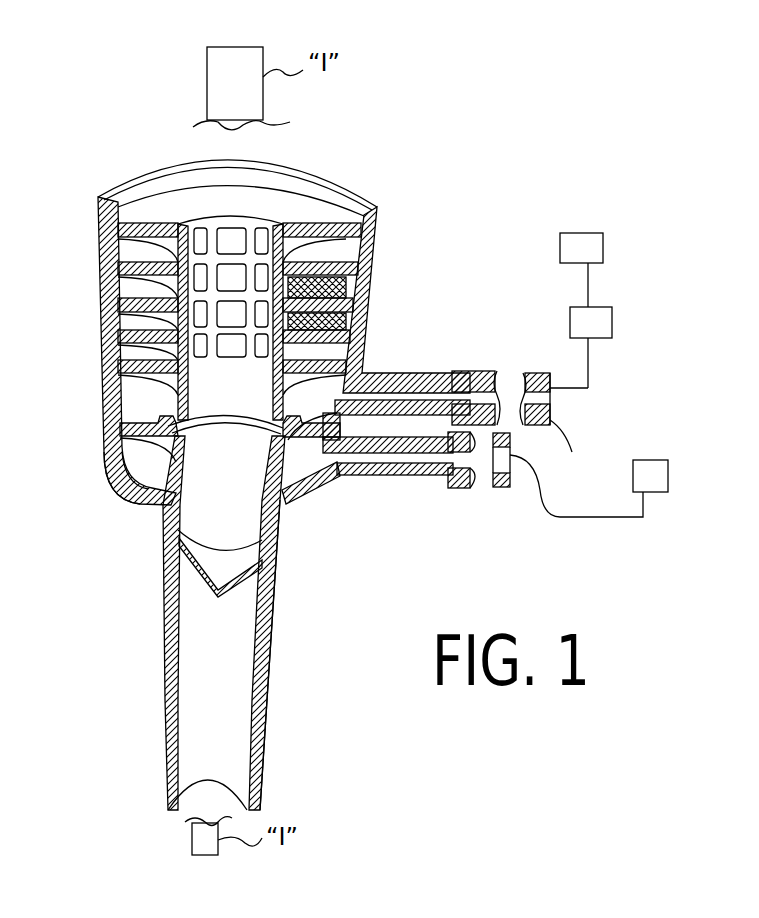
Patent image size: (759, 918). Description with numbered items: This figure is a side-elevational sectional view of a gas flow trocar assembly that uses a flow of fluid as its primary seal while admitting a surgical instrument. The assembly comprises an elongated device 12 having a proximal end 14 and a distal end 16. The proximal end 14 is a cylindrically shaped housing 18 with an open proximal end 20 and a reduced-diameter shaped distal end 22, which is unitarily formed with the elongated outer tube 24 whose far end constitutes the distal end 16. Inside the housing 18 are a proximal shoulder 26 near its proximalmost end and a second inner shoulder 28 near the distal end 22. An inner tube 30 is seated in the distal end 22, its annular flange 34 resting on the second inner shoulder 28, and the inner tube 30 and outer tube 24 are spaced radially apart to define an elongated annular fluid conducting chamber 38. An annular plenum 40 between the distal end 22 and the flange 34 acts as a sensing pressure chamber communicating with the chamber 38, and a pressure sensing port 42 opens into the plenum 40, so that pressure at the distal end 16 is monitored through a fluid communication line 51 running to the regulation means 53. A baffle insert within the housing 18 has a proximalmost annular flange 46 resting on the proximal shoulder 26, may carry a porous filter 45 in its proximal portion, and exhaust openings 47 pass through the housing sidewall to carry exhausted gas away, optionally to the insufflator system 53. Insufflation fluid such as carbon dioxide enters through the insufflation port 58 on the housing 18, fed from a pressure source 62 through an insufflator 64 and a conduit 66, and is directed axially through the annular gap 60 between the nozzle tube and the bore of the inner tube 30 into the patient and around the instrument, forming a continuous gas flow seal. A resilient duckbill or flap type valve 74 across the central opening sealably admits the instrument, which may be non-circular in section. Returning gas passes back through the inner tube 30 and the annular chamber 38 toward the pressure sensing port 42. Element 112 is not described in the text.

The elongated device 12 is at (92, 478).
The proximal end 14 is at (98, 232).
The distal end 16 is at (492, 375).
The housing 18 is at (97, 330).
The open proximal end 20 is at (377, 210).
The distal end of housing 22 is at (322, 488).
The outer tube 24 is at (162, 697).
The proximal shoulder 26 is at (373, 262).
The second inner shoulder 28 is at (106, 452).
The inner tube 30 is at (262, 650).
The annular flange 34 is at (110, 487).
The fluid conducting chamber 38 is at (267, 707).
The annular plenum 40 is at (142, 465).
The pressure sensing port 42 is at (393, 478).
The porous filter 45 is at (365, 346).
The proximalmost annular flange 46 is at (320, 213).
The exhaust openings 47 is at (352, 300).
The fluid communication line 51 is at (588, 519).
The regulation means 53 is at (662, 472).
The insufflation port 58 is at (410, 378).
The annular gap 60 is at (238, 428).
The pressure source 62 is at (603, 250).
The insufflator 64 is at (612, 317).
The conduit 66 is at (573, 390).
The duckbill or flap type valve 74 is at (280, 589).
The connector 112 is at (457, 483).